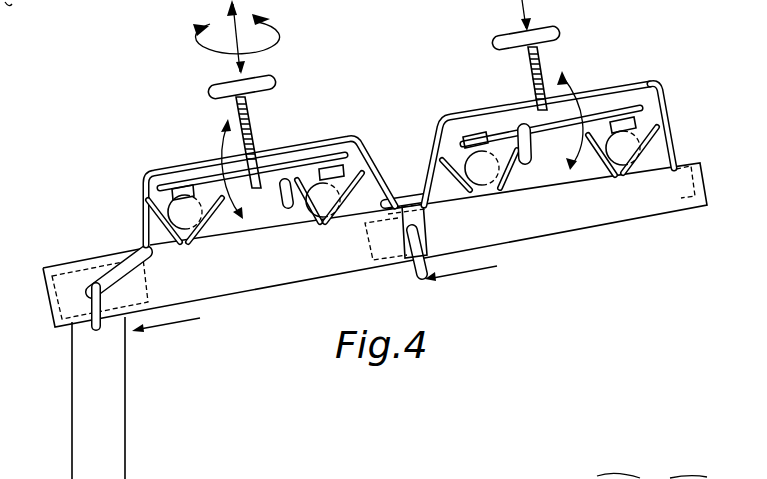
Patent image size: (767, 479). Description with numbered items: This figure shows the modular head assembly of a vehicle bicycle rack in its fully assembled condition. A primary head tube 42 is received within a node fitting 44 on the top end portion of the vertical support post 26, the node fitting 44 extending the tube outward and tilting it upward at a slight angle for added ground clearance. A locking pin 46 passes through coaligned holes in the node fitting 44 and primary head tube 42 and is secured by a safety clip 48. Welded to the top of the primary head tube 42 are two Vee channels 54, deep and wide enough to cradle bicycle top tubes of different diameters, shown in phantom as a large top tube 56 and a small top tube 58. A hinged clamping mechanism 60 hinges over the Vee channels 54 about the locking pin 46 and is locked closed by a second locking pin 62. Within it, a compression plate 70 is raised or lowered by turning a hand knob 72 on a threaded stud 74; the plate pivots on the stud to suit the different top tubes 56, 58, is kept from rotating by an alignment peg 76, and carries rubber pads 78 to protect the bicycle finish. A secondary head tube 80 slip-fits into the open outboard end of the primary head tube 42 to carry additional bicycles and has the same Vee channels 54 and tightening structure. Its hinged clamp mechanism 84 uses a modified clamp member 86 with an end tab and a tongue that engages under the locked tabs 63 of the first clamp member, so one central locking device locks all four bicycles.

The vertical support post 26 is at (114, 416).
The primary head tube 42 is at (278, 277).
The node fitting 44 is at (61, 268).
The locking pin 46 is at (90, 328).
The safety clip 48 is at (27, 9).
The Vee channels 54 is at (222, 221).
The large diameter bicycle top tube 56 is at (193, 245).
The small diameter bicycle top tube 58 is at (338, 228).
The hinged clamping mechanism 60 is at (346, 135).
The second locking pin 62 is at (410, 276).
The locked tabs 63 is at (403, 198).
The compression plate 70 is at (214, 172).
The hand knob 72 is at (275, 79).
The threaded stud 74 is at (254, 124).
The alignment peg 76 is at (282, 182).
The rubber pads 78 is at (148, 183).
The secondary head tube 80 is at (580, 219).
The hinged clamp mechanism 84 is at (630, 75).
The clamp member 86 is at (666, 99).